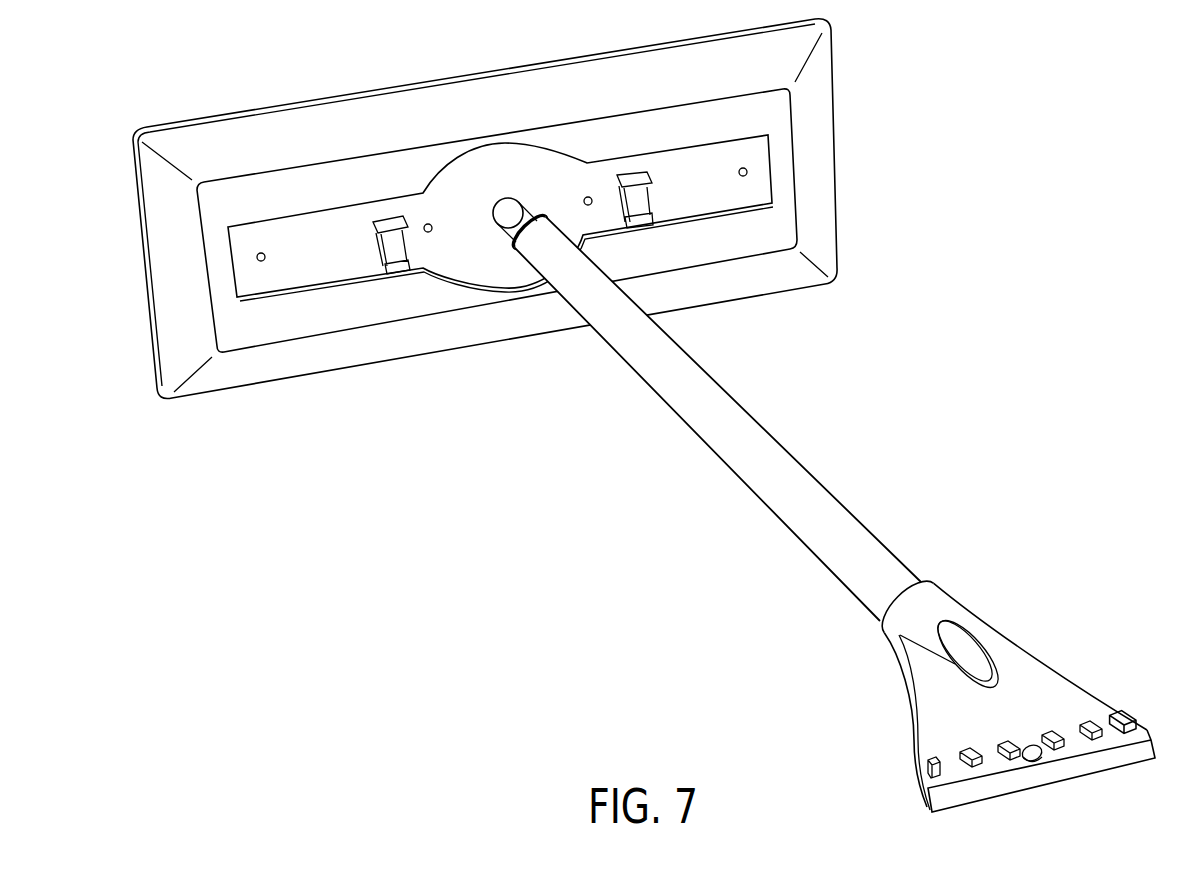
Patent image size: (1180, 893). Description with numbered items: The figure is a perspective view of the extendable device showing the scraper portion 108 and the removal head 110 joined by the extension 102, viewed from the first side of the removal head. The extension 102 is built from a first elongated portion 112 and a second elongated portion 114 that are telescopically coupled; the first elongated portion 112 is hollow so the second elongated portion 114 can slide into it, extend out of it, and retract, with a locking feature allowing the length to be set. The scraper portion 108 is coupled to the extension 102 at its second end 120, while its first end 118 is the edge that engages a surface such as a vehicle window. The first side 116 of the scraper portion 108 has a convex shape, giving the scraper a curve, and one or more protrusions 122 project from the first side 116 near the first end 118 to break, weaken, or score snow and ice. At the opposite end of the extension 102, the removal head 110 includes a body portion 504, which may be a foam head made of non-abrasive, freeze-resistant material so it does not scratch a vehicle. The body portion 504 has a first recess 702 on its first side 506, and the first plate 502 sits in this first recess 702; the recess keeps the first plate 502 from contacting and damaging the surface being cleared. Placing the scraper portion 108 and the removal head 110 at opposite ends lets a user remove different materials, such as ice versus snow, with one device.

The extension 102 is at (800, 526).
The scraper portion 108 is at (1011, 705).
The removal head 110 is at (488, 223).
The first elongated portion 112 is at (662, 380).
The second elongated portion 114 is at (508, 220).
The first side 116 is at (932, 703).
The first end 118 is at (1025, 792).
The second end 120 is at (938, 589).
The protrusions 122 is at (921, 775).
The first plate 502 is at (725, 160).
The body portion 504 is at (838, 137).
The first side 506 is at (790, 228).
The first recess 702 is at (506, 317).